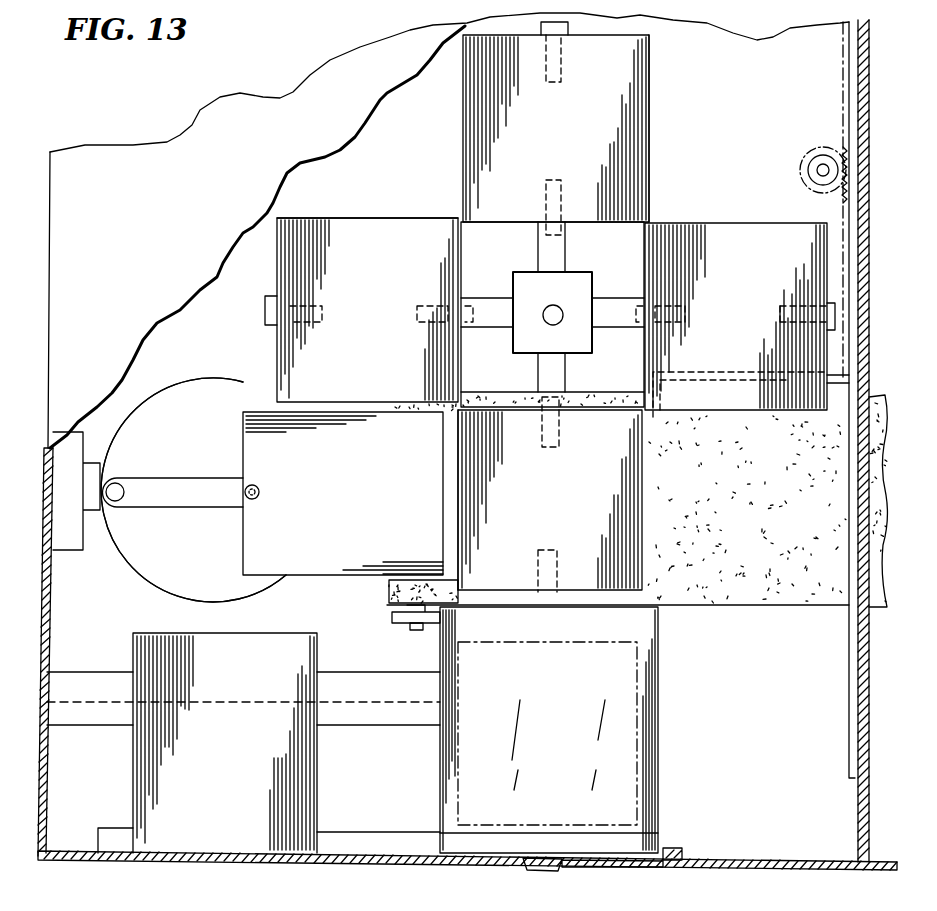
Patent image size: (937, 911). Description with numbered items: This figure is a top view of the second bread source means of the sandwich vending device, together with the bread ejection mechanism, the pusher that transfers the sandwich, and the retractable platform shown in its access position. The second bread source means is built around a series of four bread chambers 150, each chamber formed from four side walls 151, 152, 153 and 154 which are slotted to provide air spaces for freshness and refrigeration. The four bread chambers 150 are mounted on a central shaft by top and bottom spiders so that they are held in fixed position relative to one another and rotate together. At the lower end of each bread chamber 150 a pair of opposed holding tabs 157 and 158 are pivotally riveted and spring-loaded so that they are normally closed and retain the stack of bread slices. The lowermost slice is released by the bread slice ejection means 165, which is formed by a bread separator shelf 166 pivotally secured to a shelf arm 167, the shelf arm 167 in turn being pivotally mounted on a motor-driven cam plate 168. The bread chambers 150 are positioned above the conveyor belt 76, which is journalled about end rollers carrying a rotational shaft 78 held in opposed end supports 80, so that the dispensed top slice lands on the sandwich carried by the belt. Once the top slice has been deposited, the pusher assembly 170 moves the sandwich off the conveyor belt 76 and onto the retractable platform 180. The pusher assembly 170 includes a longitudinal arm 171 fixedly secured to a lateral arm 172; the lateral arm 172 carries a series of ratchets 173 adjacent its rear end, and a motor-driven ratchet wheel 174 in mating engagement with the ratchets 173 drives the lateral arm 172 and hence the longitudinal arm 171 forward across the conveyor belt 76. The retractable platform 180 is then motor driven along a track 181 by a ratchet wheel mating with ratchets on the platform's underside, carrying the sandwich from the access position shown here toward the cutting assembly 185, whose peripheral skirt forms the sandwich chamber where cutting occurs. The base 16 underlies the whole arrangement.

The base plate 16 is at (597, 861).
The conveyor belt 76 is at (756, 526).
The rotational shaft 78 is at (410, 631).
The end supports 80 is at (392, 617).
The bread chambers 150 is at (552, 312).
The side wall 151 is at (640, 30).
The side wall 152 is at (463, 105).
The side wall 153 is at (462, 247).
The side wall 154 is at (650, 120).
The holding tab 157 is at (563, 83).
The holding tab 158 is at (552, 180).
The bread slice ejection means 165 is at (199, 381).
The bread separator shelf 166 is at (372, 502).
The shelf arm 167 is at (210, 498).
The cam plate 168 is at (198, 450).
The pusher assembly 170 is at (833, 385).
The longitudinal arm 171 is at (552, 307).
The lateral arm 172 is at (843, 205).
The ratchets 173 is at (841, 147).
The ratchet wheel 174 is at (806, 170).
The retractable platform 180 is at (564, 730).
The track 181 is at (398, 727).
The cutting assembly 185 is at (235, 750).